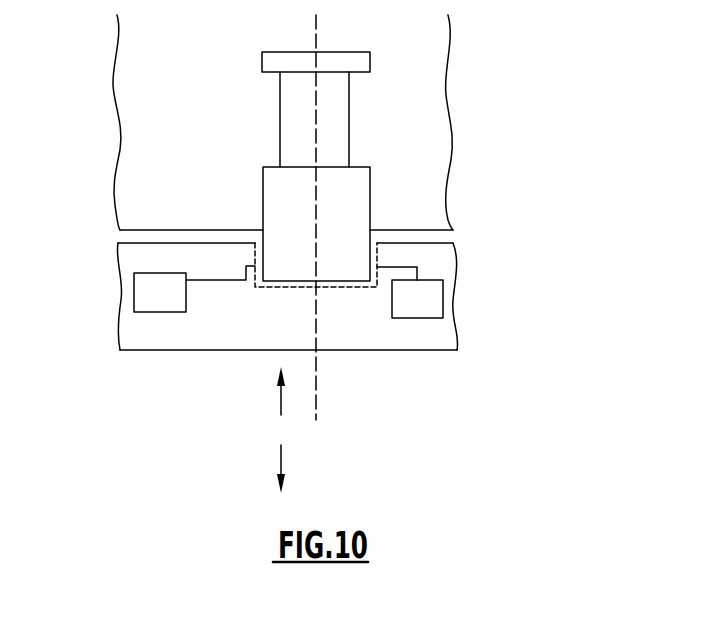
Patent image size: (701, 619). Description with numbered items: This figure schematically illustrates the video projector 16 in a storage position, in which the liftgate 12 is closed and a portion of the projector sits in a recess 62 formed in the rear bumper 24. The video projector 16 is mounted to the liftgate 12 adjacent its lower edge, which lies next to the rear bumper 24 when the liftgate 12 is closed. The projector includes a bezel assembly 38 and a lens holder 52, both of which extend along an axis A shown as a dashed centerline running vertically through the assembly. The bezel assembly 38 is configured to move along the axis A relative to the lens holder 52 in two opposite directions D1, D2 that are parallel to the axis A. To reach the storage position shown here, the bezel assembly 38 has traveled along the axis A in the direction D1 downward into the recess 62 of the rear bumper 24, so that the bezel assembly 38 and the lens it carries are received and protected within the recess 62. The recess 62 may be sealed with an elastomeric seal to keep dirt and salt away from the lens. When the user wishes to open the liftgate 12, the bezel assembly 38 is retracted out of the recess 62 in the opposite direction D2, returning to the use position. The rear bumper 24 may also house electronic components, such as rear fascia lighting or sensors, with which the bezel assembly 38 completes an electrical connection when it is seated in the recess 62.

The liftgate 12 is at (137, 152).
The video projector 16 is at (305, 166).
The rear bumper 24 is at (138, 261).
The bezel assembly 38 is at (382, 201).
The lens holder 52 is at (297, 115).
The recess 62 is at (283, 290).
The axis A is at (316, 380).
The direction D1 is at (281, 458).
The direction D2 is at (281, 398).